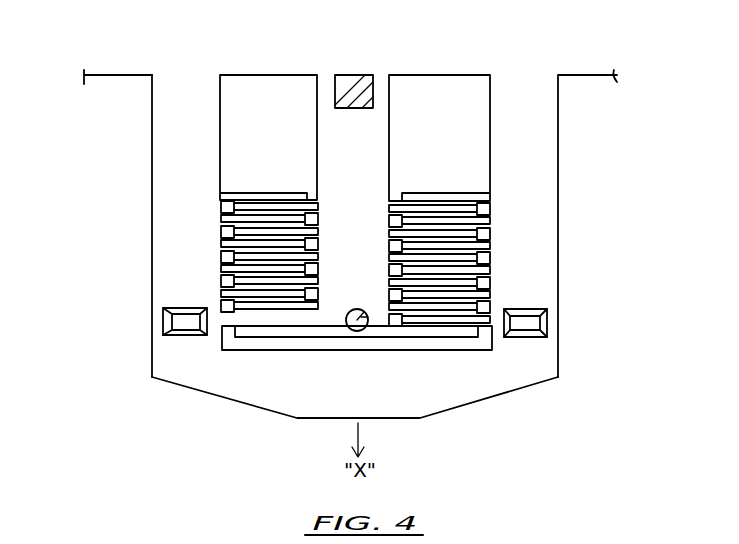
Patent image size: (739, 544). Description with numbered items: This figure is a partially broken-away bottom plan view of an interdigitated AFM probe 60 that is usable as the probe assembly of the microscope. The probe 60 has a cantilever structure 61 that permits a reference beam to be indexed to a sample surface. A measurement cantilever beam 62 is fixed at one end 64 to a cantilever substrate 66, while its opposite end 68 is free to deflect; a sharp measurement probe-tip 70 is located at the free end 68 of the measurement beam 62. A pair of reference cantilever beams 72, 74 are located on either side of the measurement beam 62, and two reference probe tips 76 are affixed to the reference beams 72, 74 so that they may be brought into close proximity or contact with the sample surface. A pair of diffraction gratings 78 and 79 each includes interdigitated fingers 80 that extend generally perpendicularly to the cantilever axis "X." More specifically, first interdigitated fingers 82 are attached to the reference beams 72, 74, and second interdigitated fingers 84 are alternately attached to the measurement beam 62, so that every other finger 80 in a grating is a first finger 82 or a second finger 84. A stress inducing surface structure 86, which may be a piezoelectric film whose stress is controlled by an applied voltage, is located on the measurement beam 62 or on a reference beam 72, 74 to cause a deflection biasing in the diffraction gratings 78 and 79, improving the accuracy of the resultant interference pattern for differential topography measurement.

The interdigitated AFM probe 60 is at (517, 53).
The cantilever structure 61 is at (188, 93).
The measurement cantilever beam 62 is at (390, 140).
The fixed end 64 is at (305, 80).
The cantilever substrate 66 is at (104, 80).
The free end 68 is at (380, 324).
The measurement probe-tip 70 is at (351, 331).
The reference cantilever beam 72 is at (162, 124).
The reference cantilever beam 74 is at (540, 117).
The reference probe tips 76 is at (188, 334).
The diffraction grating 78 is at (267, 188).
The diffraction grating 79 is at (443, 190).
The interdigitated fingers 80 is at (200, 285).
The first interdigitated fingers 82 is at (227, 247).
The second interdigitated fingers 84 is at (220, 208).
The stress inducing surface structure 86 is at (360, 78).